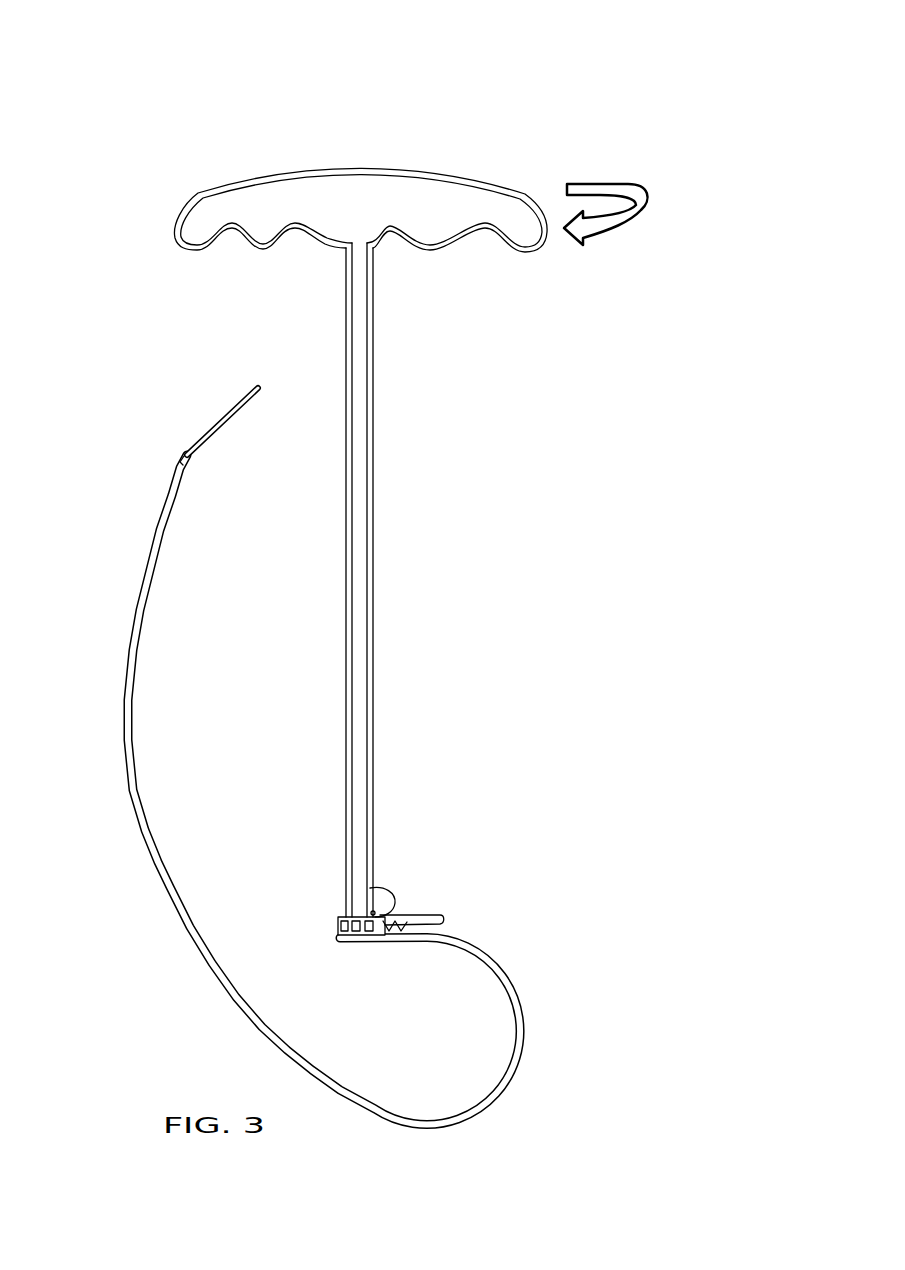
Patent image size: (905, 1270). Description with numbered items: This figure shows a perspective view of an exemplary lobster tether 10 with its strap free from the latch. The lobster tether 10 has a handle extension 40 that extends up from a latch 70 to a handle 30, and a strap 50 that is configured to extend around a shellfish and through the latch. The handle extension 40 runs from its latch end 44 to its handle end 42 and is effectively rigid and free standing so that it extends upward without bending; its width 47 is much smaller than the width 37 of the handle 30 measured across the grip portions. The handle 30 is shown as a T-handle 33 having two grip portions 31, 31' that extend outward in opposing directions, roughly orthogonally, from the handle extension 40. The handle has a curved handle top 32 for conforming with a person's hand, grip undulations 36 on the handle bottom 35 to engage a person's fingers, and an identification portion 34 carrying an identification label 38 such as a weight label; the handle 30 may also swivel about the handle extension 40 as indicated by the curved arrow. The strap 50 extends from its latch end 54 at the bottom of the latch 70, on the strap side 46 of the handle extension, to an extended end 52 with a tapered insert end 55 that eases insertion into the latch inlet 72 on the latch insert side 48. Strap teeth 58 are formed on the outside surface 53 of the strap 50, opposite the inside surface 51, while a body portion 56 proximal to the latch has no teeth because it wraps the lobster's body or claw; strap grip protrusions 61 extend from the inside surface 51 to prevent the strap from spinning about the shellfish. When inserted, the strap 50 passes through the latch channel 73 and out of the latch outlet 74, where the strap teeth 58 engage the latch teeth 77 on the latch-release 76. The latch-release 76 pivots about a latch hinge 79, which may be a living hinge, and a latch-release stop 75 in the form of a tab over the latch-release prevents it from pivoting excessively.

The lobster tether 10 is at (104, 165).
The handle 30 is at (532, 250).
The grip portion 31 is at (216, 160).
The grip portion 31' is at (508, 144).
The handle top 32 is at (412, 188).
The T-handle 33 is at (260, 215).
The identification portion 34 is at (347, 208).
The handle bottom 35 is at (267, 253).
The grip undulations 36 is at (480, 245).
The width of the handle 37 is at (173, 5).
The identification label 38 is at (360, 213).
The handle extension 40 is at (360, 496).
The handle end 42 is at (372, 255).
The latch end 44 is at (350, 907).
The strap side 46 is at (372, 680).
The width of the handle extension 47 is at (373, 572).
The latch insert side 48 is at (352, 680).
The strap 50 is at (152, 542).
The inside surface 51 is at (145, 830).
The extended end 52 is at (262, 386).
The outside surface 53 is at (146, 840).
The latch end of the strap 54 is at (400, 937).
The tapered insert end 55 is at (248, 393).
The body portion 56 is at (525, 1020).
The strap teeth 58 is at (172, 476).
The strap grip protrusions 61 is at (513, 1063).
The latch 70 is at (358, 937).
The latch inlet 72 is at (342, 922).
The latch channel 73 is at (342, 936).
The latch outlet 74 is at (395, 937).
The latch-release stop 75 is at (388, 910).
The latch-release 76 is at (432, 917).
The latch teeth 77 is at (406, 913).
The latch hinge 79 is at (377, 888).